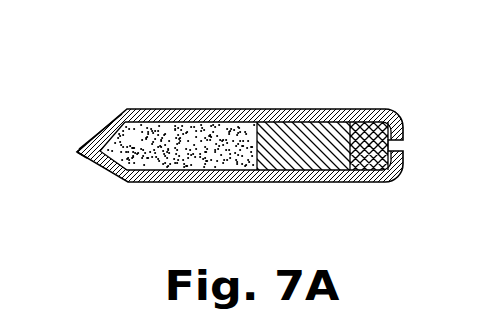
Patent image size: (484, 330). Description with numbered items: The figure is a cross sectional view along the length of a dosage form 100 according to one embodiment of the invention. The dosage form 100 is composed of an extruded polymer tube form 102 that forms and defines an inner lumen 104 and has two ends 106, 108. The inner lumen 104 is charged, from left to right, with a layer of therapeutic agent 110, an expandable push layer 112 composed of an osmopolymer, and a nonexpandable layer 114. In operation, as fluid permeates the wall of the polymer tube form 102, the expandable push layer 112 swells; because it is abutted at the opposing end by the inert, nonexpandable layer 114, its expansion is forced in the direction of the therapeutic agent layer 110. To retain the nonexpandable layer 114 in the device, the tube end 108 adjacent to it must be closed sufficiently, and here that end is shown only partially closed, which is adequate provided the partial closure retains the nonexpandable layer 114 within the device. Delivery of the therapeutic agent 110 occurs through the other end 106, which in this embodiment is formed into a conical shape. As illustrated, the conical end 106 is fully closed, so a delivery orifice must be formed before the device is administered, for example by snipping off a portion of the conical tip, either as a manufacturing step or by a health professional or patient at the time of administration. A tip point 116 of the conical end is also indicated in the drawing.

The dosage form 100 is at (341, 79).
The extruded polymer tube form 102 is at (233, 101).
The inner lumen 104 is at (188, 142).
The tube end 106 is at (110, 116).
The tube end 108 is at (403, 124).
The layer of therapeutic agent 110 is at (203, 158).
The expandable push layer 112 is at (292, 158).
The nonexpandable layer 114 is at (367, 158).
The tip point 116 is at (78, 152).